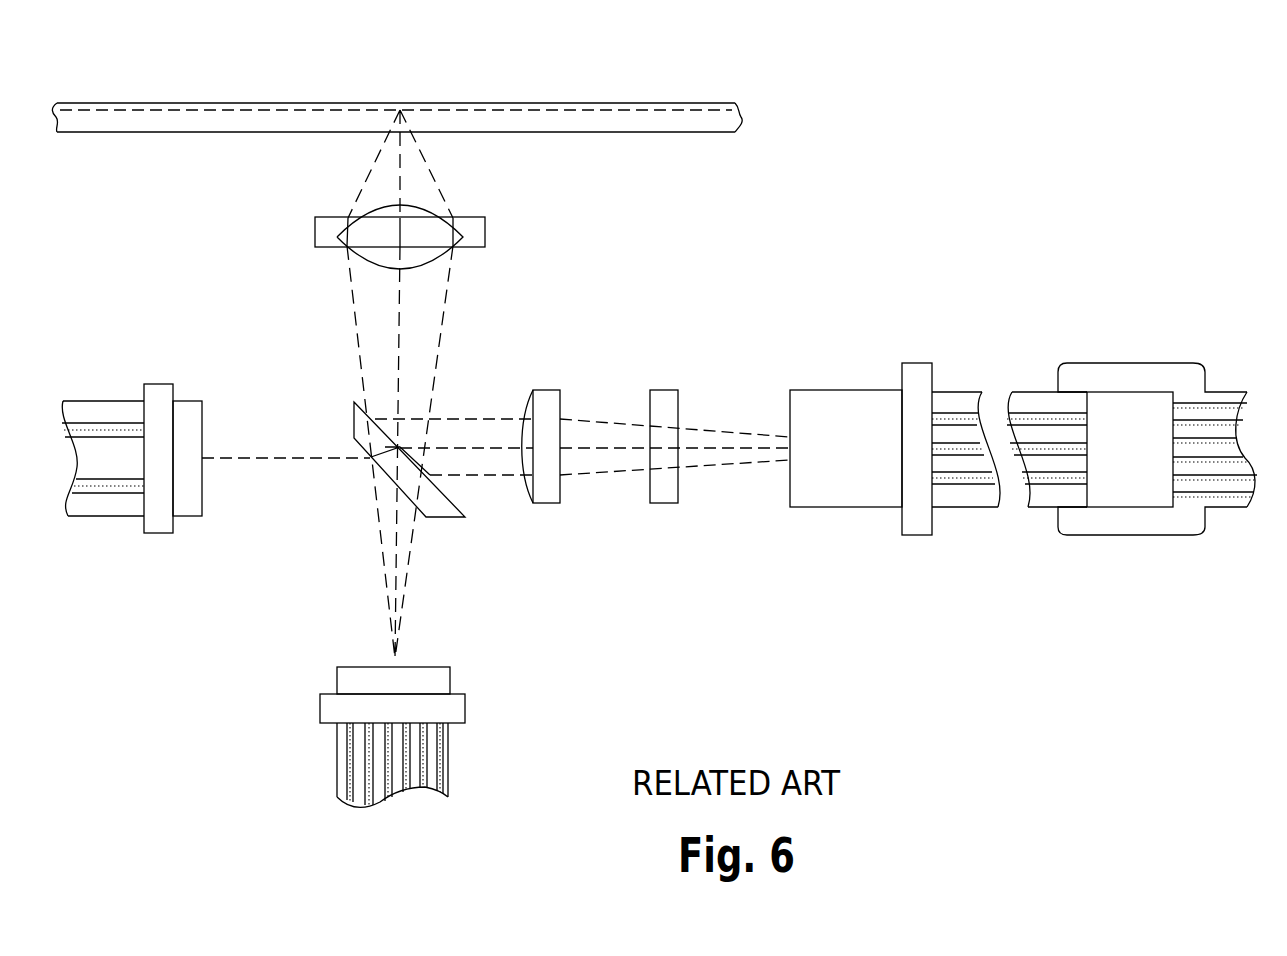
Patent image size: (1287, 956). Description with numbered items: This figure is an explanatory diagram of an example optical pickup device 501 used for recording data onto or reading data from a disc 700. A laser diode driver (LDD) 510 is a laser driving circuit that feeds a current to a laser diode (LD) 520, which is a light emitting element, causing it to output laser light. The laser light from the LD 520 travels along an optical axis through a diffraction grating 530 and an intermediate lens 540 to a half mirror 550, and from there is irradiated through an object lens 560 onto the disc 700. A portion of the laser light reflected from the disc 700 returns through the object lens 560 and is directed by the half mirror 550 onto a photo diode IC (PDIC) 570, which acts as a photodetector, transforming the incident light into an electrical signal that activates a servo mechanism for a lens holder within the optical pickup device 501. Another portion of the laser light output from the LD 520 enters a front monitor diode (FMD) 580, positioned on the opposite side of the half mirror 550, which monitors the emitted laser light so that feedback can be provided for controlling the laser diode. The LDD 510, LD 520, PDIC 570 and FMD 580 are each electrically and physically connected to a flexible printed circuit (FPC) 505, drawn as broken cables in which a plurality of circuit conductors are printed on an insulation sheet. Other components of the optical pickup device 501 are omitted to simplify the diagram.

The optical pickup device 501 is at (964, 217).
The FPC (flexible printed circuit) 505 is at (109, 519).
The LDD (laser diode driver) 510 is at (1131, 390).
The LD (laser diode) 520 is at (849, 388).
The diffraction grating 530 is at (666, 388).
The intermediate lens 540 is at (549, 388).
The half mirror 550 is at (353, 420).
The object lens 560 is at (489, 231).
The PDIC (photo diode IC) 570 is at (467, 711).
The FMD (front monitor diode) 580 is at (157, 382).
The disc 700 is at (568, 102).